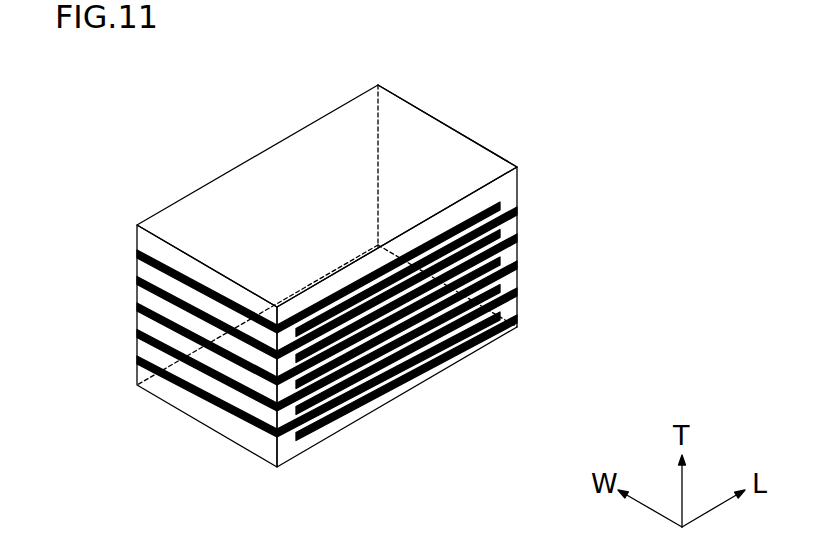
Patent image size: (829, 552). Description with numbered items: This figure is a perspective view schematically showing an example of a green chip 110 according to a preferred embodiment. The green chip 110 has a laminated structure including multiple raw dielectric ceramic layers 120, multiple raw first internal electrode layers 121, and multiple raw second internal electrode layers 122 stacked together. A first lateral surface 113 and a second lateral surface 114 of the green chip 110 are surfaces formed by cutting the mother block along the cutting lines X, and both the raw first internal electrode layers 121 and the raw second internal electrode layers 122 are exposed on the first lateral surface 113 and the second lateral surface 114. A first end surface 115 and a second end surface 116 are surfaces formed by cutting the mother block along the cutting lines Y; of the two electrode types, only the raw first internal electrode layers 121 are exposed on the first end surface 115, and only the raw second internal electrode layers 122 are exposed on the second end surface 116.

The green chip 110 is at (331, 254).
The first lateral surface 113 is at (440, 355).
The second lateral surface 114 is at (247, 192).
The first end surface 115 is at (183, 390).
The second end surface 116 is at (432, 148).
The raw dielectric ceramic layer 120 is at (372, 362).
The raw first internal electrode layer 121 is at (152, 291).
The raw second internal electrode layer 122 is at (505, 270).